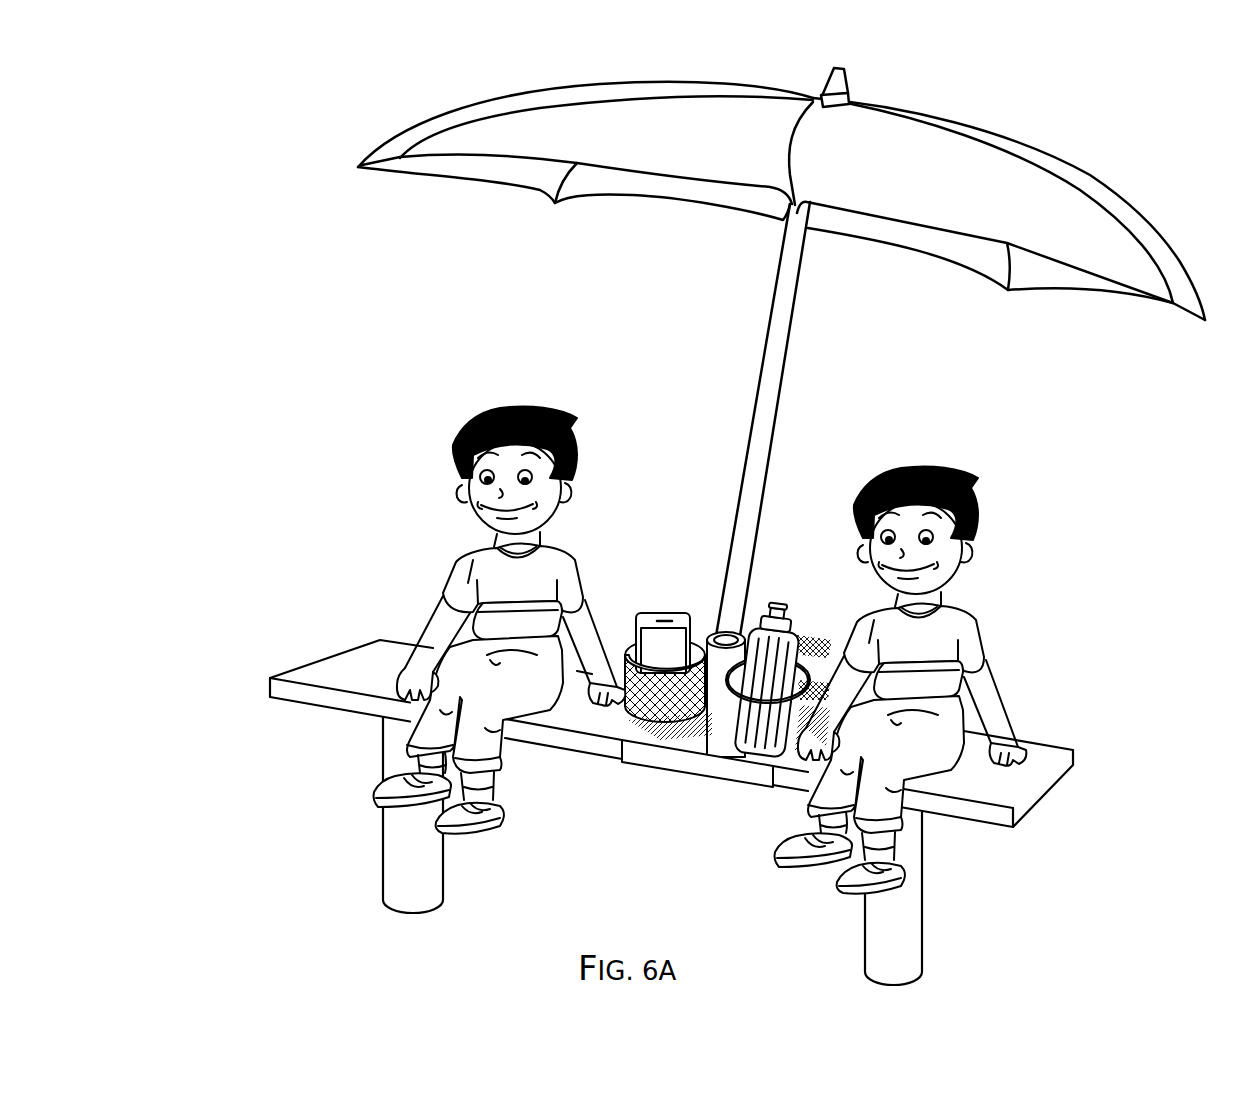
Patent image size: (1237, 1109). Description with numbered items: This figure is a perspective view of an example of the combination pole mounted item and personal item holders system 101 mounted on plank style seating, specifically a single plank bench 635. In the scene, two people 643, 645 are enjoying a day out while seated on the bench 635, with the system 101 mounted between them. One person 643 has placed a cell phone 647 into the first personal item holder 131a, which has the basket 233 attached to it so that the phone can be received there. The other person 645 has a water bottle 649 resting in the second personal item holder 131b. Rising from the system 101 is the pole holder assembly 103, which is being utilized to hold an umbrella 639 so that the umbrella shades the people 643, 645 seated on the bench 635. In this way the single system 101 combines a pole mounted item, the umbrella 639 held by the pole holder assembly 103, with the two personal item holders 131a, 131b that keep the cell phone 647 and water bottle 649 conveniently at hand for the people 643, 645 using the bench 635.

The system 101 is at (650, 803).
The pole holder assembly 103 is at (706, 616).
The first personal item holder 131a is at (647, 722).
The second personal item holder 131b is at (765, 689).
The basket 233 is at (625, 745).
The single plank bench 635 is at (287, 663).
The umbrella 639 is at (455, 190).
The person 643 is at (453, 557).
The person 645 is at (971, 600).
The cell phone 647 is at (665, 612).
The water bottle 649 is at (782, 604).